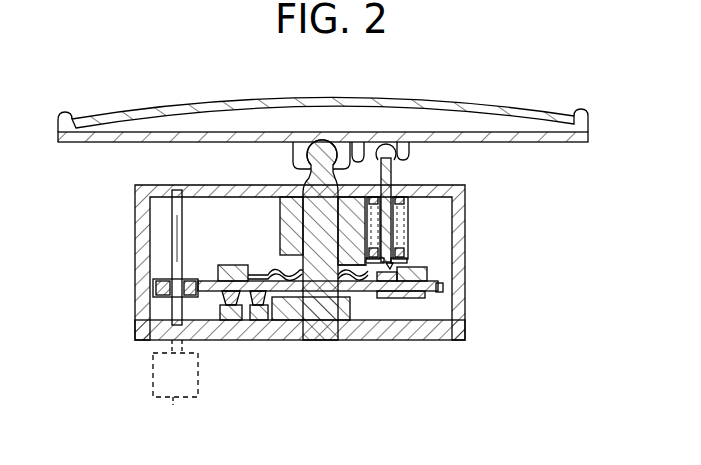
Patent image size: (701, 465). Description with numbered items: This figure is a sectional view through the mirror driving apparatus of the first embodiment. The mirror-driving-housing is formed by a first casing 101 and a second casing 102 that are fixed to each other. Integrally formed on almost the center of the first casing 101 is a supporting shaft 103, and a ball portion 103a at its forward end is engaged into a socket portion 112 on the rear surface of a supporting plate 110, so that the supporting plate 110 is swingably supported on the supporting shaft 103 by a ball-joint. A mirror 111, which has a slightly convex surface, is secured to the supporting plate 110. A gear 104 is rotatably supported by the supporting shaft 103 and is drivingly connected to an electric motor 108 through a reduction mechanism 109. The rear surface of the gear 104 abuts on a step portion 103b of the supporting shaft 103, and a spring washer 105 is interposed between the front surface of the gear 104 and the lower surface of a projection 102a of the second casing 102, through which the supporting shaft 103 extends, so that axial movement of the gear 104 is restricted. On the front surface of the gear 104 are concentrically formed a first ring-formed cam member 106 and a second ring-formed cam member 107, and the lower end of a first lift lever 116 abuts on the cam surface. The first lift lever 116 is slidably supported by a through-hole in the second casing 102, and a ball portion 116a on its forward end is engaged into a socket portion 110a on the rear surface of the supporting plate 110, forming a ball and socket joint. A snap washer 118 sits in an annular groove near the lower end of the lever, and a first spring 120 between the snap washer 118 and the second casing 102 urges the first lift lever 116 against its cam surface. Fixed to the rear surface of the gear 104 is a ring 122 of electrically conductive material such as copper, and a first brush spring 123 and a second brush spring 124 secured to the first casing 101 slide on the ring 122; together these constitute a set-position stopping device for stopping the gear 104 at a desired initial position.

The first casing 101 is at (442, 340).
The second casing 102 is at (461, 202).
The projection of the second casing 102a is at (287, 233).
The supporting shaft 103 is at (320, 282).
The ball portion 103a is at (318, 148).
The step portion 103b is at (343, 340).
The gear 104 is at (287, 292).
The spring washer 105 is at (366, 300).
The first ring-formed cam member 106 is at (179, 192).
The second ring-formed cam member 107 is at (220, 272).
The electric motor 108 is at (173, 405).
The reduction mechanism 109 is at (157, 285).
The supporting plate 110 is at (573, 142).
The socket portion 110a is at (406, 152).
The mirror 111 is at (510, 103).
The socket portion 112 is at (292, 160).
The first lift lever 116 is at (388, 210).
The ball portion 116a is at (386, 148).
The snap washer 118 is at (406, 261).
The first spring 120 is at (425, 252).
The ring 122 is at (412, 340).
The first brush spring 123 is at (228, 340).
The second brush spring 124 is at (255, 340).